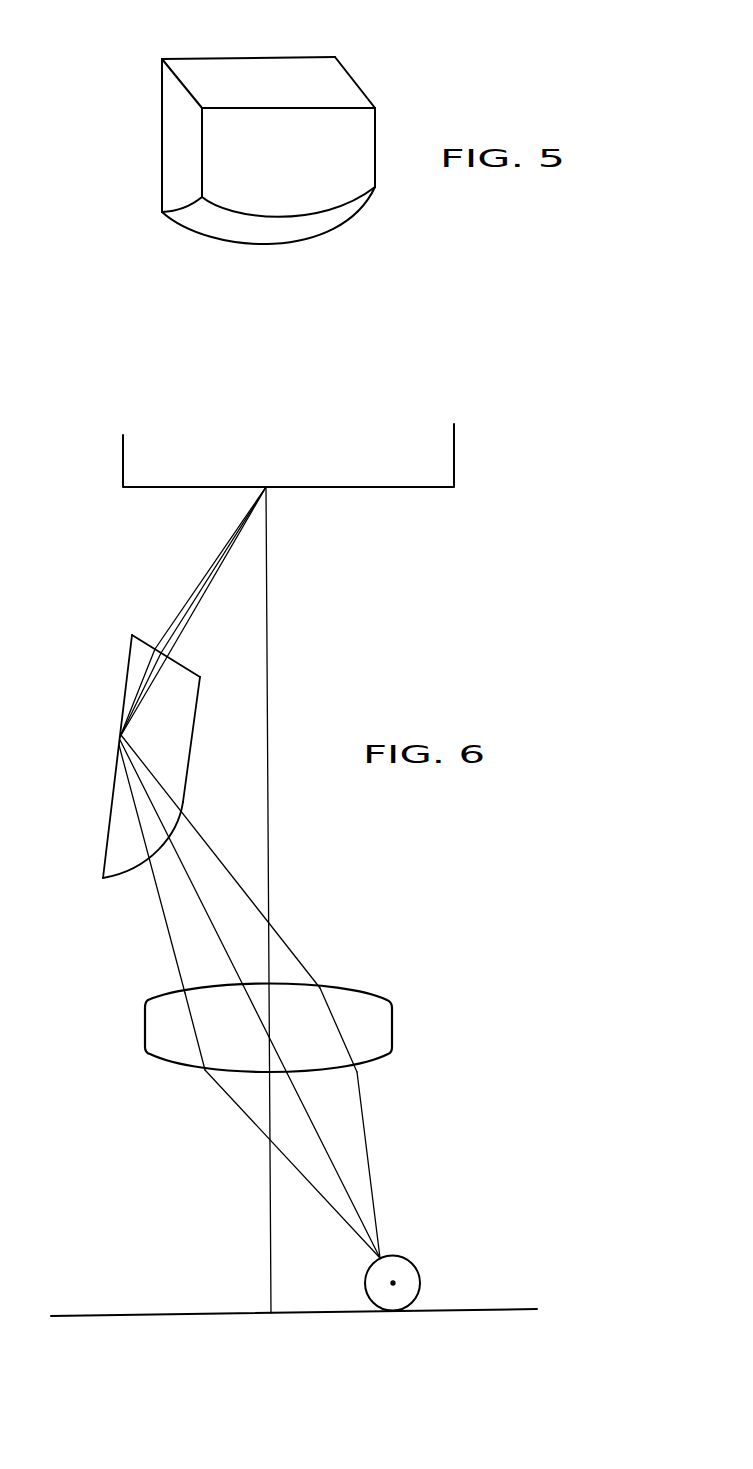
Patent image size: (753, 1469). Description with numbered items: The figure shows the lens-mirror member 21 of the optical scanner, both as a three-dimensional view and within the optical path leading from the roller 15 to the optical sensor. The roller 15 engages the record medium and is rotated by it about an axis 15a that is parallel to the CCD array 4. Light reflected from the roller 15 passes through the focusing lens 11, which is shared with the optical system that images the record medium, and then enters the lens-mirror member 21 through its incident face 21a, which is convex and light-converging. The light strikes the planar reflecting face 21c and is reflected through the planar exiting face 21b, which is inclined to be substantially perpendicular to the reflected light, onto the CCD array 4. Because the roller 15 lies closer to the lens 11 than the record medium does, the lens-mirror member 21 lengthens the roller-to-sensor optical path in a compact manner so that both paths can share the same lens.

In FIG. 6, the CCD array 4 is at (158, 477).
In FIG. 5, the lens-mirror member 21 is at (239, 143).
In FIG. 6, the lens-mirror member 21 is at (114, 755).
In FIG. 5, the incident face 21a is at (208, 227).
In FIG. 6, the incident face 21a is at (123, 880).
In FIG. 5, the exiting face 21b is at (325, 72).
In FIG. 6, the exiting face 21b is at (152, 640).
In FIG. 5, the reflecting face 21c is at (244, 55).
In FIG. 6, the reflecting face 21c is at (122, 720).
In FIG. 6, the focusing lens 11 is at (152, 1057).
In FIG. 6, the roller 15 is at (407, 1258).
In FIG. 6, the axis 15a is at (393, 1283).